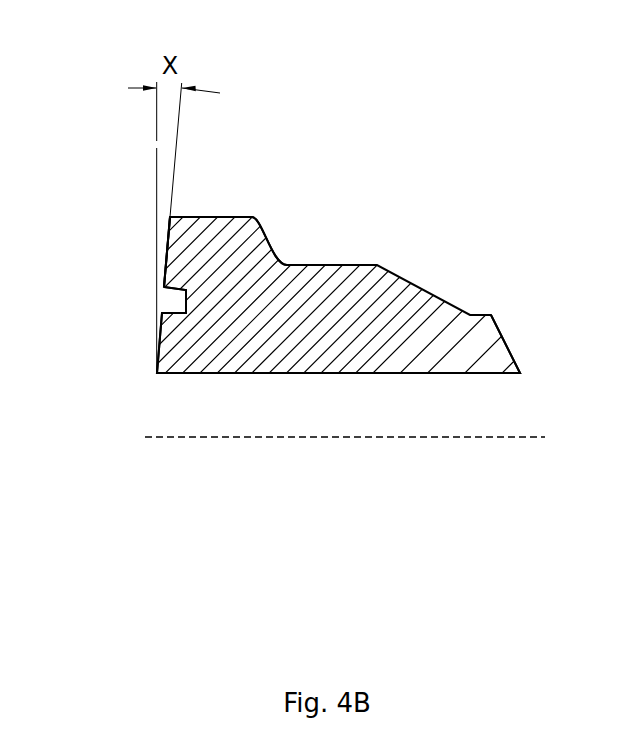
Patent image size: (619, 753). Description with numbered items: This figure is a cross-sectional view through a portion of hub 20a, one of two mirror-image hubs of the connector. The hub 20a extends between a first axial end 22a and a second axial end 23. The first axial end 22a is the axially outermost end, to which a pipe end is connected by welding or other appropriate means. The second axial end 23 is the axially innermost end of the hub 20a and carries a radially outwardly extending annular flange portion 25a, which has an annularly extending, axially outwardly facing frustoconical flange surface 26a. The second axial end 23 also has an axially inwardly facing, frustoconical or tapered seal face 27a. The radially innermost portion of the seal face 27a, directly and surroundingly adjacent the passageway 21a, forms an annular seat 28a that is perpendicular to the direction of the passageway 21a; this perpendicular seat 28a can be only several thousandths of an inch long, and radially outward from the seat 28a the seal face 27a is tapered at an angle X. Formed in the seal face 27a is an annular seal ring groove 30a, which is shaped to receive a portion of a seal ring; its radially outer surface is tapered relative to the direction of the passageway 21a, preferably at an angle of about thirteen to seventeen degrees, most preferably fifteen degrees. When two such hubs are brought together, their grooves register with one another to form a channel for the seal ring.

The hub 20a is at (366, 105).
The passageway 21a is at (345, 426).
The first axial end 22a is at (521, 367).
The second axial end 23 is at (177, 215).
The annular flange portion 25a is at (235, 192).
The frustoconical flange surface 26a is at (265, 245).
The seal face 27a is at (171, 238).
The annular seat 28a is at (157, 373).
The seal ring groove 30a is at (175, 305).